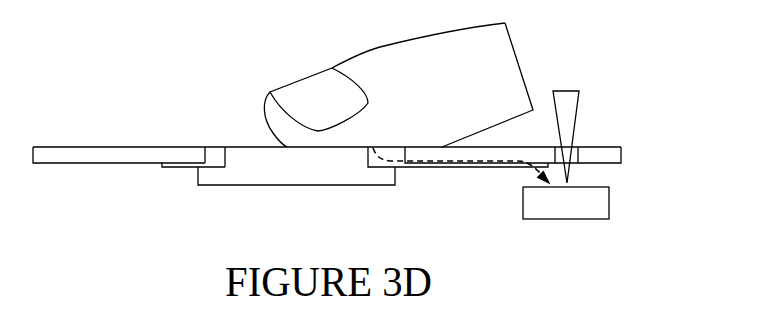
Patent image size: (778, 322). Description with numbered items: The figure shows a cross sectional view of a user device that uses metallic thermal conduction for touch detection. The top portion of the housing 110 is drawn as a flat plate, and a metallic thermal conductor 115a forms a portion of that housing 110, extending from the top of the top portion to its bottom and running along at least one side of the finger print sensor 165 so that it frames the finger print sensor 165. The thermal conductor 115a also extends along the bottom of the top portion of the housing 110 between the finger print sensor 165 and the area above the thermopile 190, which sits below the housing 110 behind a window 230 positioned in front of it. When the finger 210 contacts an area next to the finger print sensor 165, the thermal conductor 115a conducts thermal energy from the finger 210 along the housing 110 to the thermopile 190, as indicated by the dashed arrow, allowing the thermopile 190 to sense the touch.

The housing 110 is at (621, 155).
The metallic thermal conductor 115a is at (180, 167).
The finger print sensor 165 is at (313, 185).
The finger 210 is at (513, 43).
The window 230 is at (578, 113).
The thermopile 190 is at (609, 202).